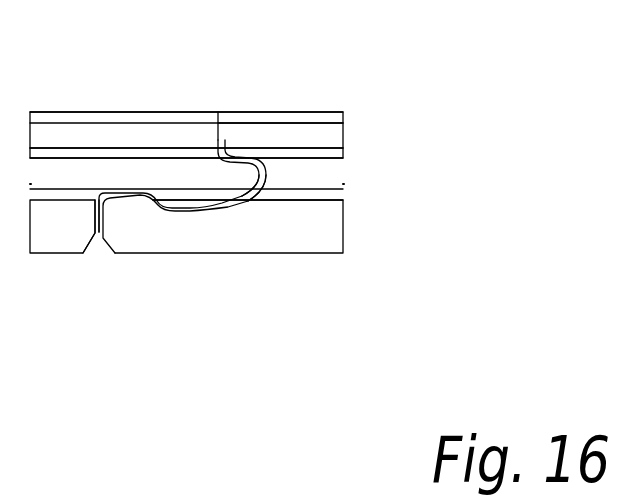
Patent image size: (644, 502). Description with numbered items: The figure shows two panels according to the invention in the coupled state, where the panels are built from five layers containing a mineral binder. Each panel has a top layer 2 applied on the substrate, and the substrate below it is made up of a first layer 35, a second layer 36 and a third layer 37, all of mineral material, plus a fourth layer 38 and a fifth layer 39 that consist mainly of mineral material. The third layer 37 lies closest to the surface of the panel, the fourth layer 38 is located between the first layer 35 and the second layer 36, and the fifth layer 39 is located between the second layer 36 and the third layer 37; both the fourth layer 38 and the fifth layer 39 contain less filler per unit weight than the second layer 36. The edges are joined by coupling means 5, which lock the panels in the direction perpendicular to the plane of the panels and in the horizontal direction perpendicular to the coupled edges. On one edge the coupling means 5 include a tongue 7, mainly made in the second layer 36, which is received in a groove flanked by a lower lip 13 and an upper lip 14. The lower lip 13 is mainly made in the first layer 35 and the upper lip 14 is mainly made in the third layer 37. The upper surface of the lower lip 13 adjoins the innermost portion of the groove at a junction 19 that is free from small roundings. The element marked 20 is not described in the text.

The top layer 2 is at (47, 118).
The tongue 7 is at (240, 177).
The upper lip 14 is at (243, 143).
The third layer 37 is at (317, 137).
The fifth layer 39 is at (323, 153).
The second layer 36 is at (322, 173).
The fourth layer 38 is at (327, 195).
The first layer 35 is at (337, 212).
The junction 19 is at (259, 195).
The lower lip 13 is at (222, 228).
The insert 20 is at (125, 222).
The coupling means 5 is at (96, 267).